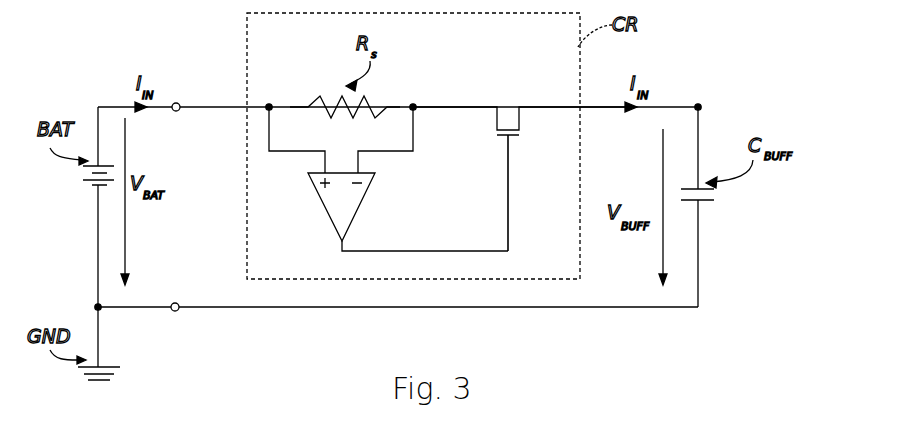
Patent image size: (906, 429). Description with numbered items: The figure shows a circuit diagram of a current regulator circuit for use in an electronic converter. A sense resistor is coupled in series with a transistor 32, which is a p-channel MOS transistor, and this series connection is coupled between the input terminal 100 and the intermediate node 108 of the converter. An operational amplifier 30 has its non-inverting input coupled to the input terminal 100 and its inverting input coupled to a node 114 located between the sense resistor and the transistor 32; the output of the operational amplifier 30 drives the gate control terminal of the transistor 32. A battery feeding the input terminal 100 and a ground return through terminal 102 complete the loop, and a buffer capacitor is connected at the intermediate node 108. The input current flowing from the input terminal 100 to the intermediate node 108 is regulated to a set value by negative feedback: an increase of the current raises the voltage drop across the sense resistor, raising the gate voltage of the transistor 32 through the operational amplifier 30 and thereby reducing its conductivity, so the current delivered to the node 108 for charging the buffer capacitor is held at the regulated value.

The operational amplifier 30 is at (355, 213).
The transistor 32 is at (513, 92).
The input terminal 100 is at (176, 103).
The ground node 102 is at (175, 311).
The intermediate node 108 is at (698, 103).
The node 114 is at (414, 103).